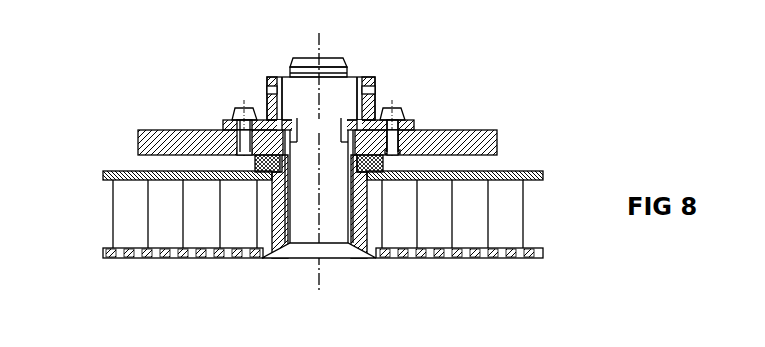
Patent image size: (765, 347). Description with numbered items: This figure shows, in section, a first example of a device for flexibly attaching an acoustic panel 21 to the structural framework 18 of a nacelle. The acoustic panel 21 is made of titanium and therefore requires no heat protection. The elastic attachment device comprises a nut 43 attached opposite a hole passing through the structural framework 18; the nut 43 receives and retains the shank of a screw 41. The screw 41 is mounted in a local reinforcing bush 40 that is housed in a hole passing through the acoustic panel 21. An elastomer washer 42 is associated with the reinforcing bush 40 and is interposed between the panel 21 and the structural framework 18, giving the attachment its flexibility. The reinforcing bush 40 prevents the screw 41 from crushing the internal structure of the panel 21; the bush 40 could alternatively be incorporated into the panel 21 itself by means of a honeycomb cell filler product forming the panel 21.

The structural framework 18 is at (113, 123).
The acoustic panel 21 is at (133, 226).
The reinforcing bush 40 is at (268, 212).
The screw 41 is at (336, 262).
The elastomer washer 42 is at (392, 163).
The nut 43 is at (378, 70).